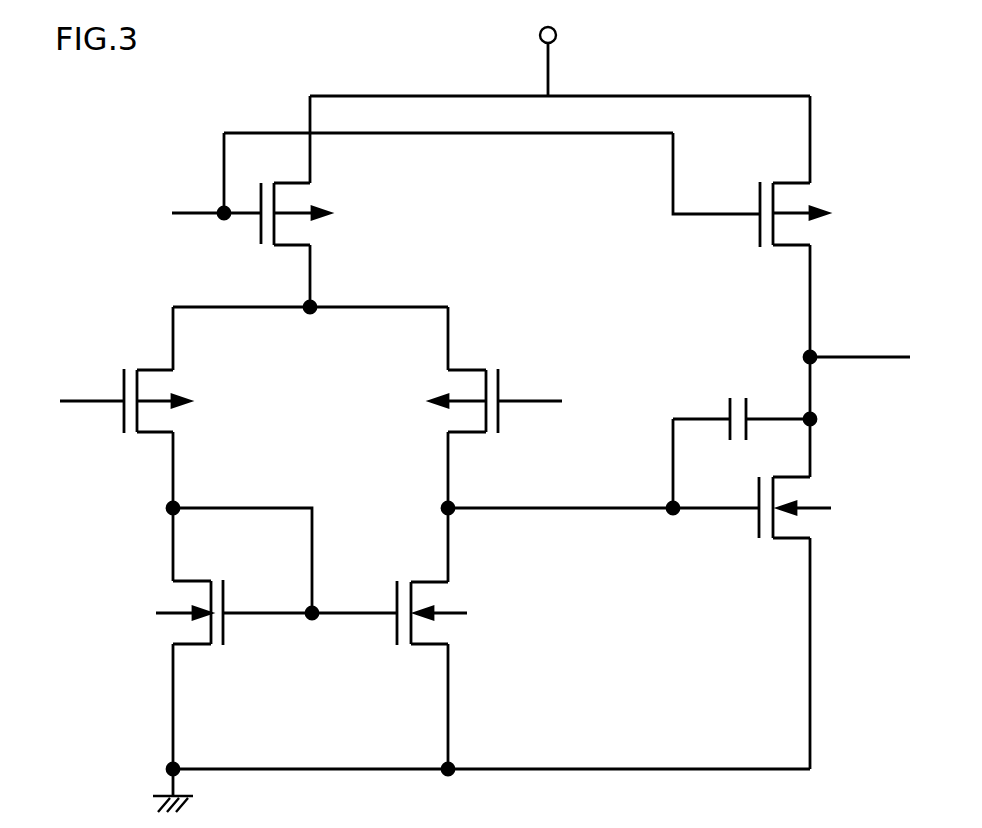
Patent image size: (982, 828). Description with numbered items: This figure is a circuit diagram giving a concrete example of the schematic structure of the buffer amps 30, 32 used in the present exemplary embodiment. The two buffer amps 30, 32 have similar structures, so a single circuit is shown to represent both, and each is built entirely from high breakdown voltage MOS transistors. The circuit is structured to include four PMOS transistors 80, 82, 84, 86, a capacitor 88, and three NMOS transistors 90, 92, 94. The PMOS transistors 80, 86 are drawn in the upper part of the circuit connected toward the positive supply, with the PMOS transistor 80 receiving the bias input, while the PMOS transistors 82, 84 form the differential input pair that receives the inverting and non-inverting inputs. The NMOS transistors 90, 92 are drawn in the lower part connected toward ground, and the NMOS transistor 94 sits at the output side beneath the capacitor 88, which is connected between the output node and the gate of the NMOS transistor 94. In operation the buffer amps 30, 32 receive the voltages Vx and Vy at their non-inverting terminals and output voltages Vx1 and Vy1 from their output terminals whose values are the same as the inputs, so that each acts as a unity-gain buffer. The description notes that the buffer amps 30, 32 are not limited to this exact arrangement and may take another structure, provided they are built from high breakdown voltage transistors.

The buffer amp 30 is at (498, 419).
The buffer amp 32 is at (933, 51).
The PMOS transistor 80 is at (339, 187).
The PMOS transistor 82 is at (199, 378).
The PMOS transistor 84 is at (514, 369).
The PMOS transistor 86 is at (835, 177).
The capacitor 88 is at (742, 394).
The NMOS transistor 90 is at (234, 574).
The NMOS transistor 92 is at (479, 589).
The NMOS transistor 94 is at (837, 482).